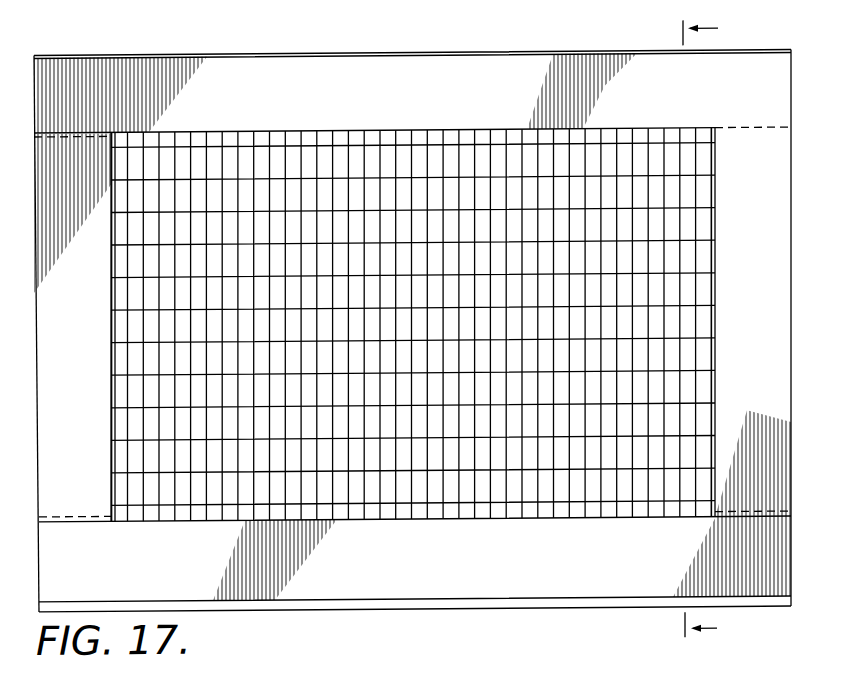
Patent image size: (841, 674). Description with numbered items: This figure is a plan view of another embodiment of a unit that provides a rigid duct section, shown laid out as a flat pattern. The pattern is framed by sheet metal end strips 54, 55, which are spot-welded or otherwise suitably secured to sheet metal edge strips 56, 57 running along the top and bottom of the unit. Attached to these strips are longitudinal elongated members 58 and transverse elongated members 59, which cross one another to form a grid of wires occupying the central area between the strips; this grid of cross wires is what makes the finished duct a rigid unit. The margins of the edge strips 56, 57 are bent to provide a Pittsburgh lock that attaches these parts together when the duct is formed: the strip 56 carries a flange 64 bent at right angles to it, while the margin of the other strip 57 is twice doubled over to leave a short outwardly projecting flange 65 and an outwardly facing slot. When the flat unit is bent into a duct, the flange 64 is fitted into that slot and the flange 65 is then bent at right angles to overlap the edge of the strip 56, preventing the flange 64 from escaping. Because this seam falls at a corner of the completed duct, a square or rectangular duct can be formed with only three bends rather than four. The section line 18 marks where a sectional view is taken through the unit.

The section line 18- 18 is at (719, 329).
The sheet metal end strip 54 is at (74, 333).
The sheet metal end strip 55 is at (752, 328).
The sheet metal edge strip 56 is at (412, 94).
The sheet metal edge strip 57 is at (415, 556).
The longitudinal elongated members 58 is at (642, 277).
The transverse elongated members 59 is at (652, 424).
The flange 64 is at (328, 56).
The flange 65 is at (365, 610).